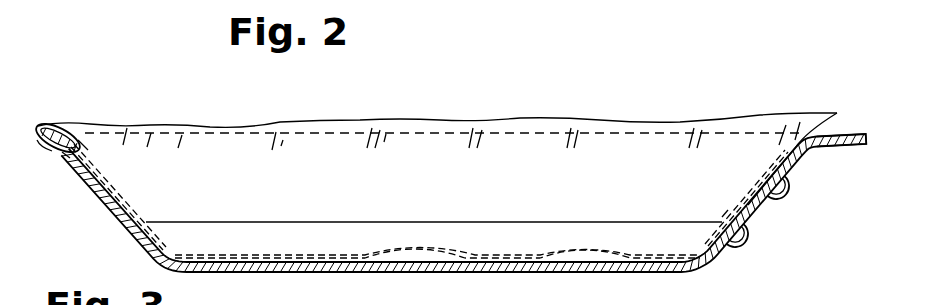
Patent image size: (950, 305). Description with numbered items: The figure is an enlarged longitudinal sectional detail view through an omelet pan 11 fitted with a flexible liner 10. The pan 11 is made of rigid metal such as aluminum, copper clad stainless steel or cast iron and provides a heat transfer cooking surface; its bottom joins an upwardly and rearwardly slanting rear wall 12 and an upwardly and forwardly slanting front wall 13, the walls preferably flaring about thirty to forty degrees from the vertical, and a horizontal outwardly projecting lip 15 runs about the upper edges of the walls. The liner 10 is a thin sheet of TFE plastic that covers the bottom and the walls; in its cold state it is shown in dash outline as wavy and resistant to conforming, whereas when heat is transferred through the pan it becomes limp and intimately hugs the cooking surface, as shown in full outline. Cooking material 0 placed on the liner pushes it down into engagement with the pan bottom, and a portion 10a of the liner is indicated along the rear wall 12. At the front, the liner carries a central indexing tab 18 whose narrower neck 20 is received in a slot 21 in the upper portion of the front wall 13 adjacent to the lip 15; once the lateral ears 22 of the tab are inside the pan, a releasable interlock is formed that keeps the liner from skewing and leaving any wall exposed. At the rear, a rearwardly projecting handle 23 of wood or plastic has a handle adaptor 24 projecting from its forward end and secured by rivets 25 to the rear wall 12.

In FIG. 2, the cooking material 0 is at (270, 222).
In FIG. 2, the liner 10 is at (437, 253).
In FIG. 2, the liner sheet edge portion 10a is at (837, 113).
In FIG. 2, the omelet pan 11 is at (530, 273).
In FIG. 2, the rear wall 12 is at (772, 204).
In FIG. 2, the forward wall 13 is at (115, 212).
In FIG. 2, the lip 15 is at (52, 150).
In FIG. 2, the central tab 18 is at (85, 152).
In FIG. 3, the central tab 18 is at (222, 296).
In FIG. 2, the neck 20 is at (58, 153).
In FIG. 2, the slot 21 is at (72, 157).
In FIG. 3, the lateral ears 22 is at (183, 296).
In FIG. 3, the handle 23 is at (278, 297).
In FIG. 2, the handle adaptor 24 is at (845, 147).
In FIG. 2, the rivets 25 is at (763, 171).